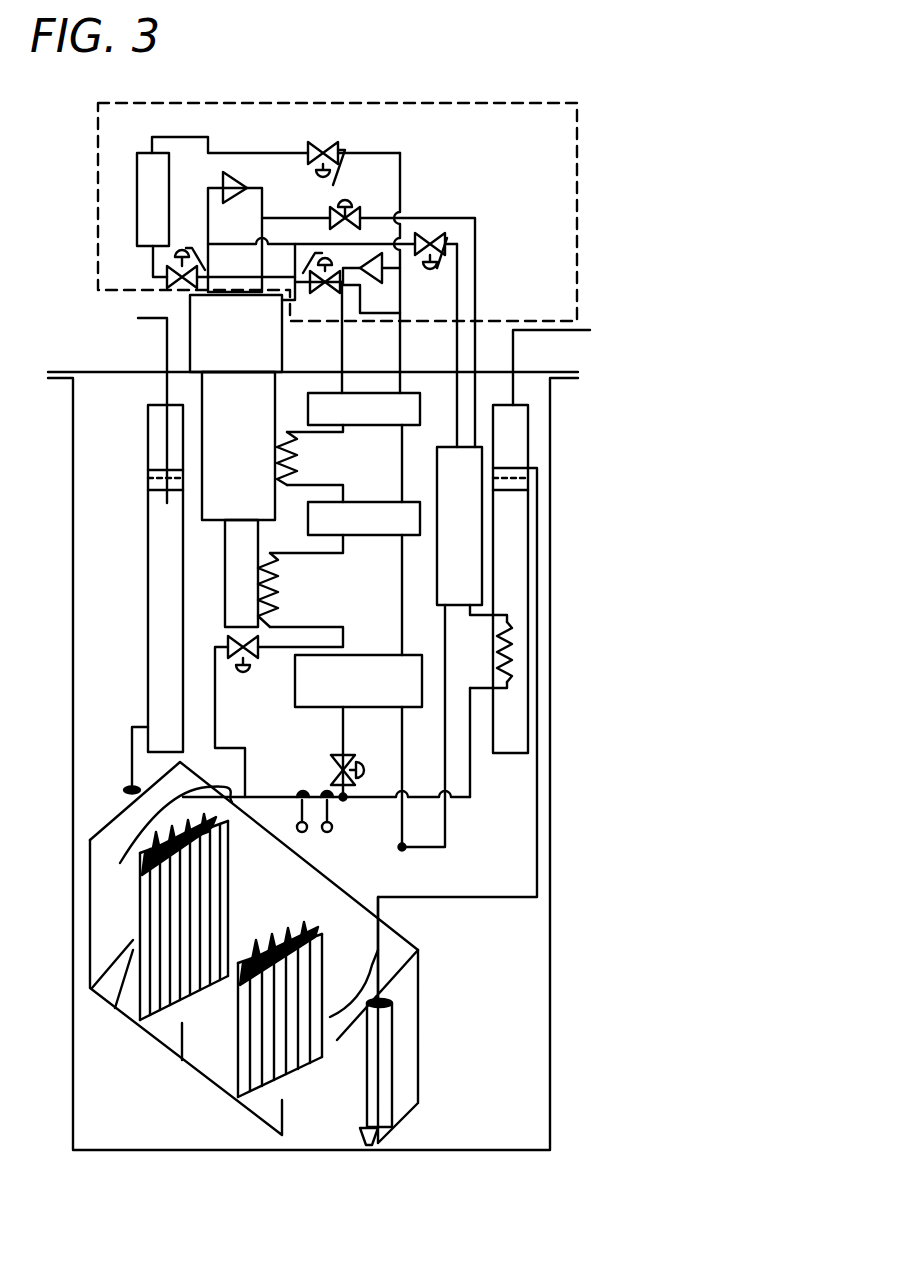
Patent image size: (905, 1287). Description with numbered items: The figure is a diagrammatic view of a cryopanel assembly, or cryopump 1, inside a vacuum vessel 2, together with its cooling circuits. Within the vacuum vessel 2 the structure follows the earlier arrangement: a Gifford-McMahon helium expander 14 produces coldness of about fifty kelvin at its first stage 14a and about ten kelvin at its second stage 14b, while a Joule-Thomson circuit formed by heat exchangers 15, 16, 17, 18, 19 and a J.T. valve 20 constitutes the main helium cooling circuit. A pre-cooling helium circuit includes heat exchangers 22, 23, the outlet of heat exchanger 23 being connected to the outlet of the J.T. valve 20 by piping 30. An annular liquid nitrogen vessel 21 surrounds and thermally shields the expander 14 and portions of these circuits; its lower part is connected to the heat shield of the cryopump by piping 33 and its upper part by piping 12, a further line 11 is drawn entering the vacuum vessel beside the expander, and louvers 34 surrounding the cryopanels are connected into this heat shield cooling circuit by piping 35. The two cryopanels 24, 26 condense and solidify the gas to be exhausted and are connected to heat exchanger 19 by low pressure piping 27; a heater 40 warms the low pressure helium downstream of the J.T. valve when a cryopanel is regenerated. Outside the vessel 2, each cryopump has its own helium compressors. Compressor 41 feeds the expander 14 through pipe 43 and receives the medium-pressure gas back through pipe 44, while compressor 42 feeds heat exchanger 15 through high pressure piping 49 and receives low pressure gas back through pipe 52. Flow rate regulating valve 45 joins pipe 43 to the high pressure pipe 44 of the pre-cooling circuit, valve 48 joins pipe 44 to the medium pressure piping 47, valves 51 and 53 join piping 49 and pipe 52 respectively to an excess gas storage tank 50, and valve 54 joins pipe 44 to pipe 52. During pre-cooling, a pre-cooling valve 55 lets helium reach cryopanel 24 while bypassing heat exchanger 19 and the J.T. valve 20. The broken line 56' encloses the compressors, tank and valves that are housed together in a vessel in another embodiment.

The cryopump 1 is at (420, 1025).
The vacuum vessel 2 is at (553, 1022).
The supply pipe 11 is at (165, 338).
The piping 12 is at (458, 897).
The helium expander 14 is at (207, 312).
The first stage 14a is at (253, 491).
The second stage 14b is at (225, 610).
The heat exchanger 15 is at (370, 427).
The heat exchanger 16 is at (290, 460).
The heat exchanger 17 is at (358, 533).
The heat exchanger 18 is at (272, 610).
The heat exchanger 19 is at (372, 660).
The Joule-Thomson valve 20 is at (350, 800).
The liquid nitrogen vessel 21 is at (530, 432).
The heat exchanger 22 is at (478, 527).
The heat exchanger 23 is at (512, 648).
The cryopanel 24 is at (132, 837).
The cryopanel 26 is at (300, 900).
The low pressure piping 27 is at (400, 738).
The piping 30 is at (478, 787).
The piping 33 is at (130, 747).
The louvers 34 is at (150, 915).
The piping 35 is at (380, 1140).
The heater 40 is at (313, 787).
The helium compressor 41 is at (224, 185).
The helium compressor 42 is at (384, 282).
The pipe 43 is at (263, 200).
The pipe 44 is at (477, 222).
The flow rate regulating valve 45 is at (348, 200).
The medium pressure piping 47 is at (460, 305).
The flow rate regulating valve 48 is at (440, 262).
The high pressure piping 49 is at (345, 352).
The excess gas storage tank 50 is at (145, 221).
The flow rate regulating valve 51 is at (165, 278).
The low pressure pipe 52 is at (403, 352).
The flow rate regulating valve 53 is at (333, 147).
The flow rate regulating valve 54 is at (325, 300).
The pre-cooling valve 55 is at (243, 680).
The broken line 56' is at (378, 212).